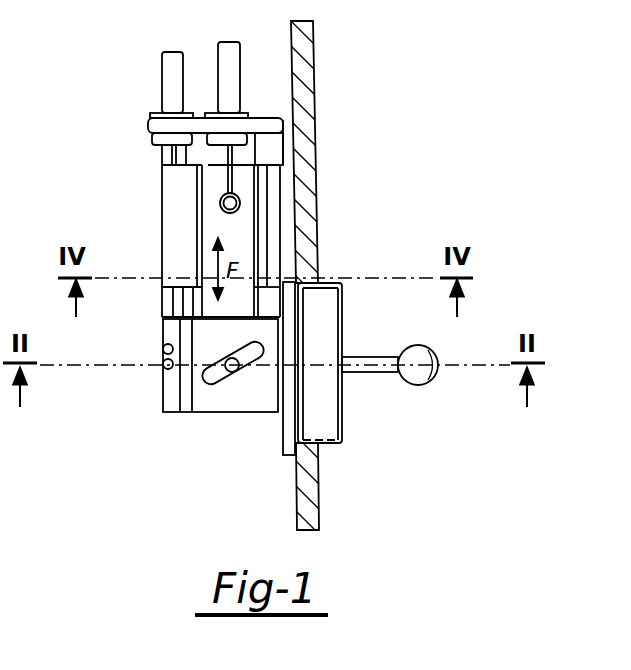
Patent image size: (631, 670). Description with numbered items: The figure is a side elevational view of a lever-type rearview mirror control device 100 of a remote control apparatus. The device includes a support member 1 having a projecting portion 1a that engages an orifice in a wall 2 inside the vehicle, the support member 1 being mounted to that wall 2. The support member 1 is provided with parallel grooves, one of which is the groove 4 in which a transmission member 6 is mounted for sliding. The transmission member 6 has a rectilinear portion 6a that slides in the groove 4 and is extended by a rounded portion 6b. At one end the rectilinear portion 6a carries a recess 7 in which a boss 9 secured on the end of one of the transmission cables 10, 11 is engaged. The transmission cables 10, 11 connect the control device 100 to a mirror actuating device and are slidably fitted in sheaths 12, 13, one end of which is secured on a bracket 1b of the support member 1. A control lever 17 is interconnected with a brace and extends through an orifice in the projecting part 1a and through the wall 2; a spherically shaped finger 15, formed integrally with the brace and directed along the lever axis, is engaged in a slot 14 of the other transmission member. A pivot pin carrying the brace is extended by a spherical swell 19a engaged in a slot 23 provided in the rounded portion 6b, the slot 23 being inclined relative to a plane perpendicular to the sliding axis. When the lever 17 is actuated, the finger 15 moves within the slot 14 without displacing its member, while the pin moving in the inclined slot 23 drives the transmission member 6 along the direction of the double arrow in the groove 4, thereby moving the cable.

The support member 1 is at (280, 247).
The projecting portion 1a is at (323, 420).
The bracket 1b is at (278, 128).
The wall 2 is at (300, 47).
The groove 4 is at (213, 222).
The transmission member 6 is at (238, 235).
The rectilinear portion 6a is at (238, 292).
The rounded portion 6b is at (245, 402).
The recess 7 is at (242, 198).
The boss 9 is at (219, 203).
The transmission cable 10 is at (235, 157).
The transmission cable 11 is at (167, 153).
The sheath 12 is at (233, 42).
The sheath 13 is at (165, 71).
The slot 14 is at (163, 348).
The spherically shaped finger 15 is at (167, 369).
The control lever 17 is at (371, 360).
The spherical swell 19a is at (230, 373).
The slot 23 is at (252, 364).
The rearview mirror control device 100 is at (345, 110).